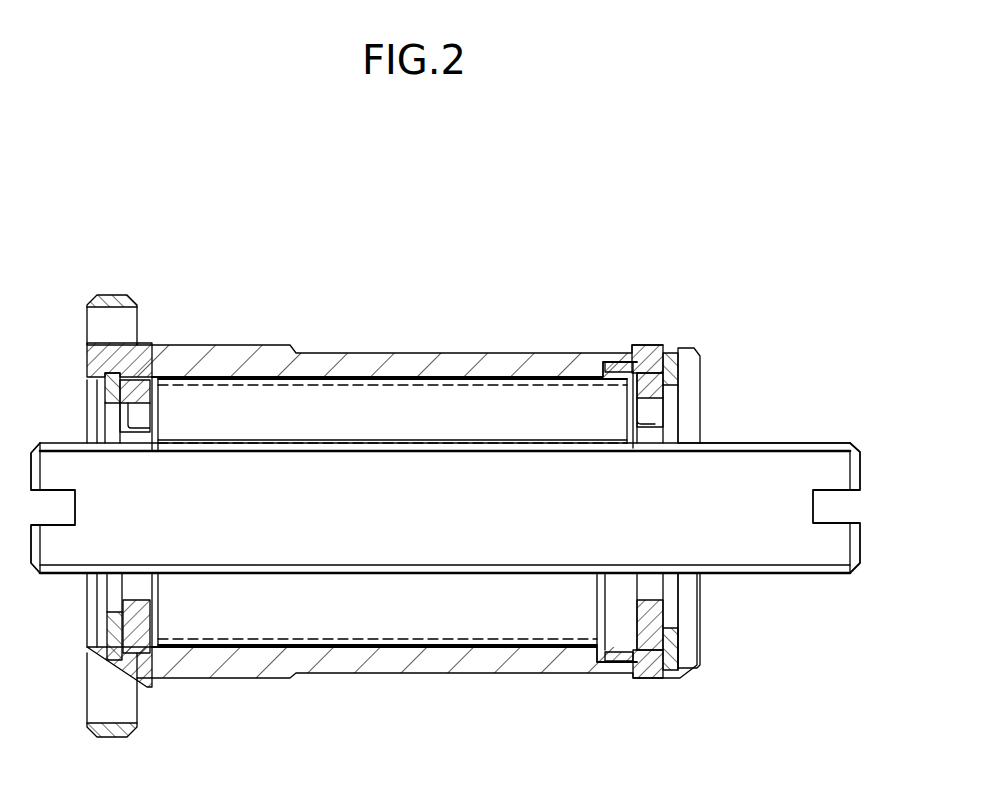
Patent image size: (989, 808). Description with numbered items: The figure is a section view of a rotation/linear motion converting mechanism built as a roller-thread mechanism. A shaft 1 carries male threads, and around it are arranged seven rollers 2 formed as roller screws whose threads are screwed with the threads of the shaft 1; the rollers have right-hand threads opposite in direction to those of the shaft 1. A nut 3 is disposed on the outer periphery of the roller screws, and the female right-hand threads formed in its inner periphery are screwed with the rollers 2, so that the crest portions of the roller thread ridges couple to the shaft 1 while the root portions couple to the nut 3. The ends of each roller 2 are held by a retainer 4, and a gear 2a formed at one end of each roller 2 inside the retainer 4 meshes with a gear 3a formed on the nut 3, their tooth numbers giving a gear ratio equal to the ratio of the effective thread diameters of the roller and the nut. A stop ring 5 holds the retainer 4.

The shaft 1 is at (733, 575).
The rollers 2 is at (459, 397).
The gear 2a is at (610, 378).
The nut 3 is at (444, 678).
The gear 3a is at (621, 661).
The retainer 4 is at (145, 683).
The stop ring 5 is at (103, 370).